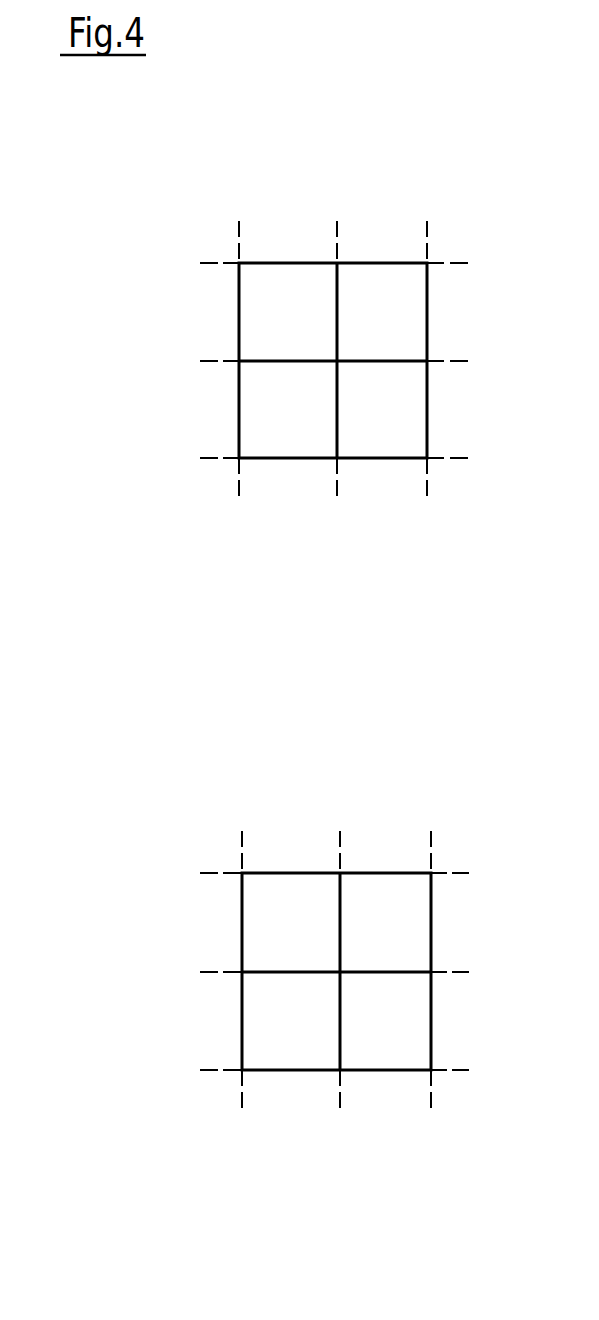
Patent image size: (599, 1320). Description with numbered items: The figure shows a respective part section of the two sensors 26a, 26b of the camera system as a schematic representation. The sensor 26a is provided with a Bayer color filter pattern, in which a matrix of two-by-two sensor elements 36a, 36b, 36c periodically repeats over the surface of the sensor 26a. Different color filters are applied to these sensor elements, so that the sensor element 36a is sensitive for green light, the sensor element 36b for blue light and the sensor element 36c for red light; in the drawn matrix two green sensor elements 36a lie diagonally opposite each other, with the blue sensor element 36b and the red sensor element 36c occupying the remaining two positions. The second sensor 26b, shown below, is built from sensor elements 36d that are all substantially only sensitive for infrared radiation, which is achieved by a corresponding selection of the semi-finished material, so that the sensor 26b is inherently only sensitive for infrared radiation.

The sensor 26a is at (280, 418).
The sensor 26b is at (282, 1030).
The sensor element 36a is at (285, 278).
The sensor element 36b is at (373, 278).
The sensor element 36c is at (286, 443).
The sensor element 36d is at (288, 887).